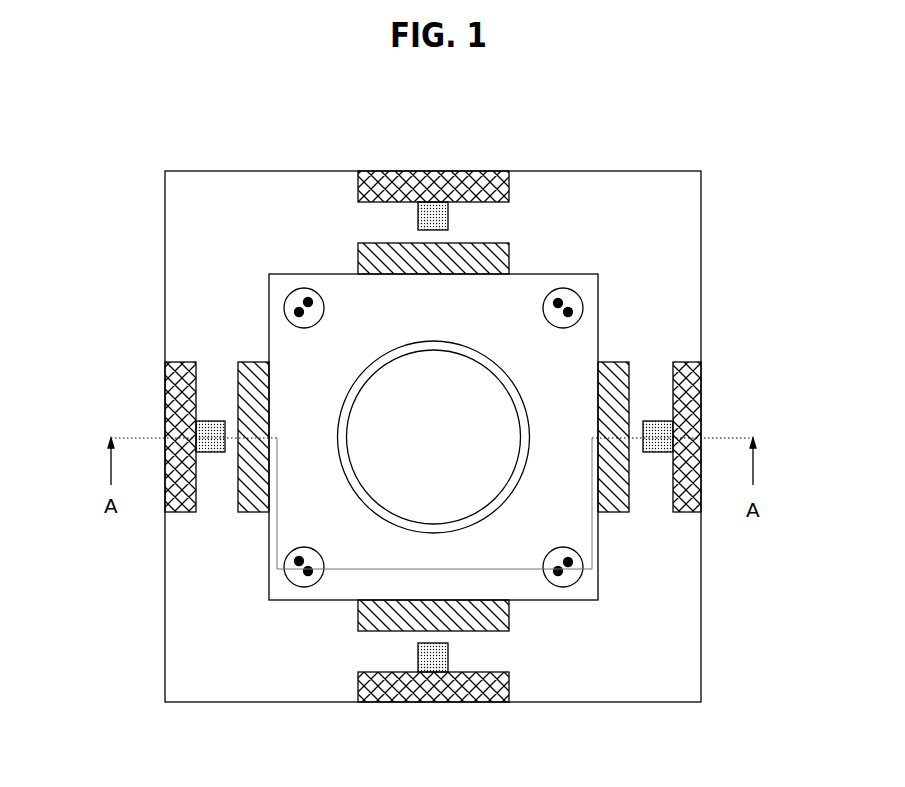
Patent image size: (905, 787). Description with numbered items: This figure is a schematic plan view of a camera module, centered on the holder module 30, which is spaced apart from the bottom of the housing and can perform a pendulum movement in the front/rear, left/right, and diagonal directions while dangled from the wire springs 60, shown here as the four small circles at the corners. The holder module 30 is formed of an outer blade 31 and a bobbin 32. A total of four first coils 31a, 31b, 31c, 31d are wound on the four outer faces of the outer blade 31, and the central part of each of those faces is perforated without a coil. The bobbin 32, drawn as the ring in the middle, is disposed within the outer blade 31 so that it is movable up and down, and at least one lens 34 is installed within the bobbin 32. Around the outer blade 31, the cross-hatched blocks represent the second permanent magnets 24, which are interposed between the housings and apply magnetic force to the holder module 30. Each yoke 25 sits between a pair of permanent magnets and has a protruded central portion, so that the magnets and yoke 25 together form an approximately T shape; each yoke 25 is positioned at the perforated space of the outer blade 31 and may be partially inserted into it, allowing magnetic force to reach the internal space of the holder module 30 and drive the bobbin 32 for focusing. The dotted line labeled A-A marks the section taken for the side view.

The holder module 30 is at (746, 140).
The outer blade 31 is at (598, 345).
The first coil 31a is at (247, 500).
The first coil 31b is at (367, 615).
The first coil 31c is at (614, 492).
The first coil 31d is at (490, 243).
The bobbin 32 is at (491, 362).
The lens 34 is at (381, 415).
The second permanent magnet 24 is at (172, 373).
The yoke 25 is at (657, 426).
The wire spring 60 is at (557, 575).